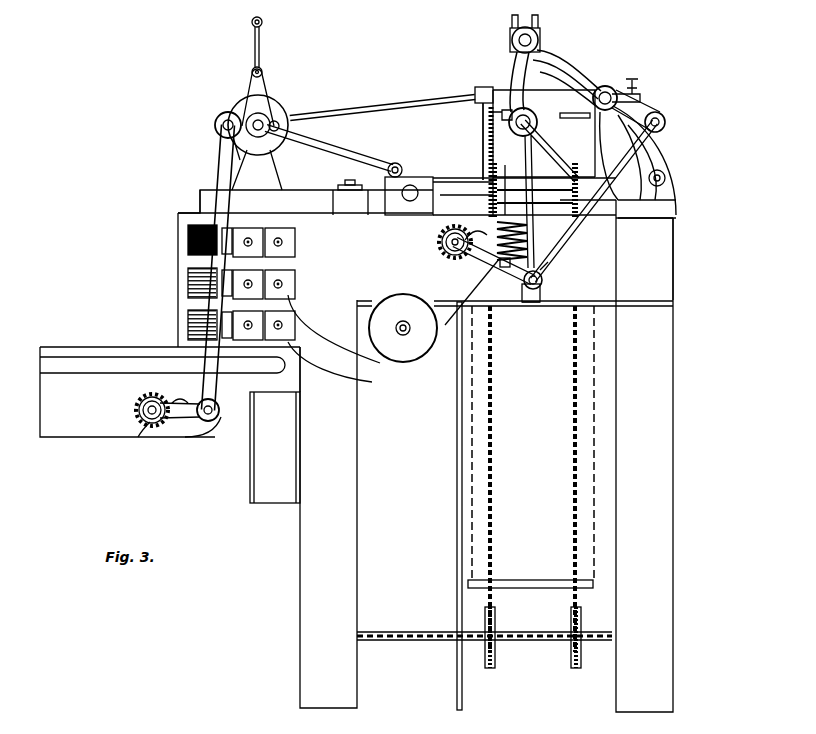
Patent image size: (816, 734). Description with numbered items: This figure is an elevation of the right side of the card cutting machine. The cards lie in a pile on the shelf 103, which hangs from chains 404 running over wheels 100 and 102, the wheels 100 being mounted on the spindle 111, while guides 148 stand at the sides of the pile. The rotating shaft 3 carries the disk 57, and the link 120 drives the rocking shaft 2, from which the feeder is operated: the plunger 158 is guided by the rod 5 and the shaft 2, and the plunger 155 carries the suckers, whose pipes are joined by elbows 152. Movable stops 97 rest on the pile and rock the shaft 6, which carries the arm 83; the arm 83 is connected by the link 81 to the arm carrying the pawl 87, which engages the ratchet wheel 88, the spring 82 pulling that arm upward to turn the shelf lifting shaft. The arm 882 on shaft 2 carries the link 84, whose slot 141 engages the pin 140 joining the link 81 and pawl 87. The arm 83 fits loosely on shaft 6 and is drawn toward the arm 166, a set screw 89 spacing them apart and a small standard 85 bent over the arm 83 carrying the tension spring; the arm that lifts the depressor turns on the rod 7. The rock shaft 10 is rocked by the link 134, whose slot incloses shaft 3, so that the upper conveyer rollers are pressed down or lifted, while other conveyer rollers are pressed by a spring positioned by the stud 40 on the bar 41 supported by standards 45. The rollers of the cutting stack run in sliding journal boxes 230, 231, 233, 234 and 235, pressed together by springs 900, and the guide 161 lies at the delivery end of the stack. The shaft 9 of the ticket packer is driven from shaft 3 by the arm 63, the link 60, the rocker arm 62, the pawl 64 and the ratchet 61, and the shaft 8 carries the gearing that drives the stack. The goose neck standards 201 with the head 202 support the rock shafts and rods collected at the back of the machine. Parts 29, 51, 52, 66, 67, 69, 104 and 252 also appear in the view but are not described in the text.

The rocking shaft 2 is at (520, 112).
The shaft 3 is at (266, 118).
The rod 5 is at (541, 35).
The shaft 6 is at (604, 113).
The rod 7 is at (666, 178).
The shaft 8 is at (406, 334).
The shaft 9 is at (140, 425).
The rock shaft 10 is at (409, 188).
The bracket 29 is at (272, 494).
The stud 40 is at (349, 180).
The bar 41 is at (359, 190).
The standards 45 is at (335, 200).
The arm 51 is at (255, 106).
The frame 52 is at (200, 195).
The disk 57 is at (235, 107).
The link 60 is at (222, 167).
The ratchet 61 is at (146, 424).
The rocker arm 62 is at (190, 418).
The arm 63 is at (214, 125).
The pawl 64 is at (175, 420).
The rod 66 is at (261, 42).
The pivot 67 is at (262, 21).
The pivot 69 is at (263, 73).
The link 81 is at (565, 200).
The spring 82 is at (545, 272).
The arm 83 is at (634, 111).
The link 84 is at (543, 238).
The standard 85 is at (641, 96).
The pawl 87 is at (492, 218).
The ratchet wheel 88 is at (456, 224).
The set screw 89 is at (640, 78).
The movable stops 97 is at (490, 153).
The wheels 100 is at (625, 205).
The wheels 102 is at (572, 653).
The shelf 103 is at (527, 589).
The bar 104 is at (402, 631).
The spindle 111 is at (505, 175).
The link 120 is at (439, 96).
The link 134 is at (308, 137).
The pin 140 is at (545, 296).
The slot 141 is at (547, 275).
The guides 148 is at (457, 420).
The elbows 152 is at (490, 138).
The plunger 155 is at (578, 118).
The plunger 158 is at (539, 14).
The guide 161 is at (88, 422).
The arm 166 is at (628, 88).
The goose neck standards 201 is at (654, 148).
The head 202 is at (531, 56).
The sliding journal box 230 is at (275, 240).
The sliding journal box 231 is at (240, 250).
The sliding journal box 233 is at (240, 290).
The sliding journal box 234 is at (347, 371).
The sliding journal box 235 is at (250, 337).
The pulley 252 is at (362, 337).
The chains 404 is at (488, 472).
The arm 882 is at (556, 88).
The springs 900 is at (193, 325).